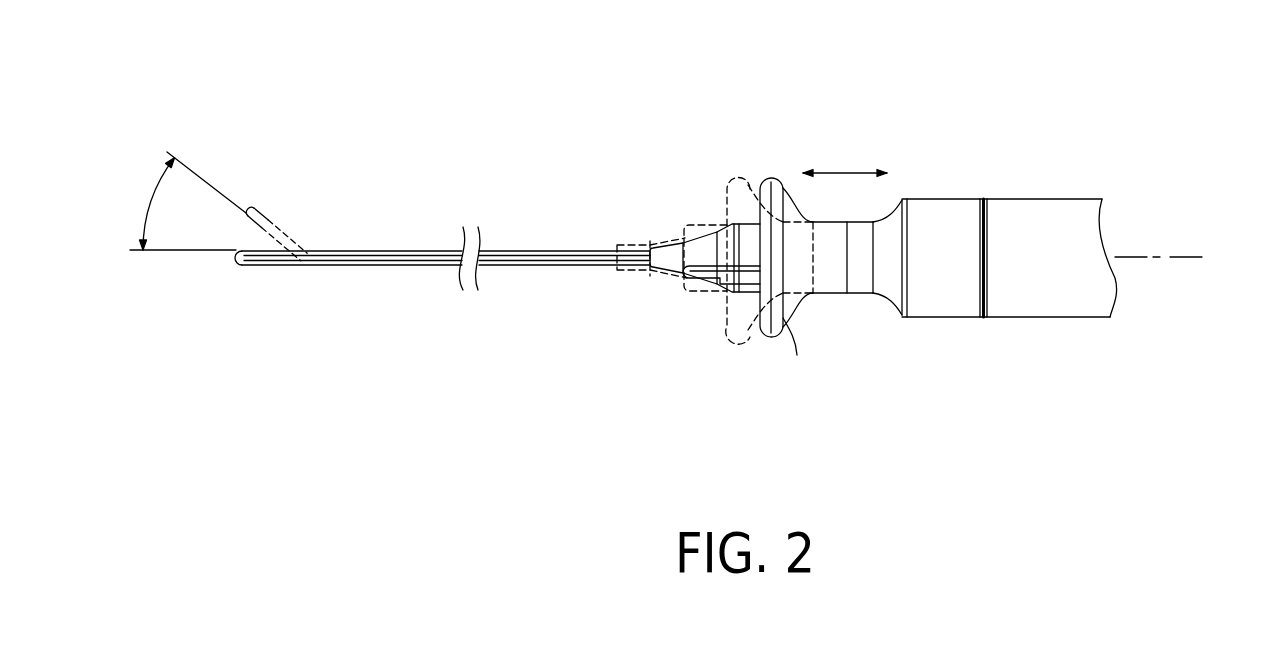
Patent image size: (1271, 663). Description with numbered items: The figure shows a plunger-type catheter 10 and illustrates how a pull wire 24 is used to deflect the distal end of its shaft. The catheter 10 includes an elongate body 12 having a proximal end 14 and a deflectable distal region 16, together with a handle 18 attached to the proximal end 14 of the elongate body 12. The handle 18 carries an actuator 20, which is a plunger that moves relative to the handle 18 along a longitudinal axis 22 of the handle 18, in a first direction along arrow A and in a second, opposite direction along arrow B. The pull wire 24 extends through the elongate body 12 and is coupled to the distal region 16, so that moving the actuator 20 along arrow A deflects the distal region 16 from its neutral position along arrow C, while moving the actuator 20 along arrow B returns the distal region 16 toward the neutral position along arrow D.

The plunger-type catheter 10 is at (1068, 78).
The elongate body 12 is at (252, 208).
The proximal end 14 is at (620, 241).
The deflectable distal region 16 is at (287, 213).
The handle 18 is at (1025, 318).
The actuator 20 is at (751, 337).
The longitudinal axis 22 is at (1180, 257).
The pull wire 24 is at (300, 249).